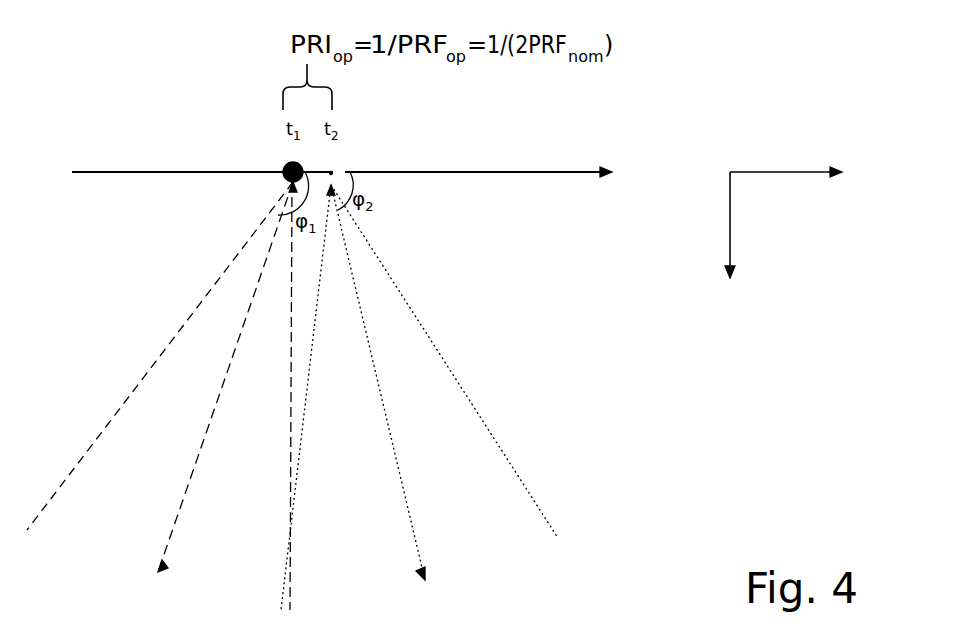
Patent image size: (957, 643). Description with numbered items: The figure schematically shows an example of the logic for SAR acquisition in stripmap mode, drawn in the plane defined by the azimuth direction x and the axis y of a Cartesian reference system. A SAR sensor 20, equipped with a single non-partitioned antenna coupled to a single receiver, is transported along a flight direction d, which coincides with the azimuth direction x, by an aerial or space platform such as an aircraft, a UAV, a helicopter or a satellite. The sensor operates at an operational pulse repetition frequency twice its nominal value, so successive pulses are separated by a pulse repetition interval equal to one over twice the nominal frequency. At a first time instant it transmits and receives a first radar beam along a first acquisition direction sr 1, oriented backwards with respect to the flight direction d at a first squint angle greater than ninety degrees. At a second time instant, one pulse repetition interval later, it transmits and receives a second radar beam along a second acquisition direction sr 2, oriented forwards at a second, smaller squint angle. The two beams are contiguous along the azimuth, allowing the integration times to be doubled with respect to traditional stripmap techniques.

The SAR sensor 20 is at (284, 164).
The first acquisition direction 1 is at (220, 377).
The second acquisition direction 2 is at (385, 382).
The flight direction d is at (342, 171).
The azimuth direction x is at (786, 183).
The y axis y is at (719, 232).